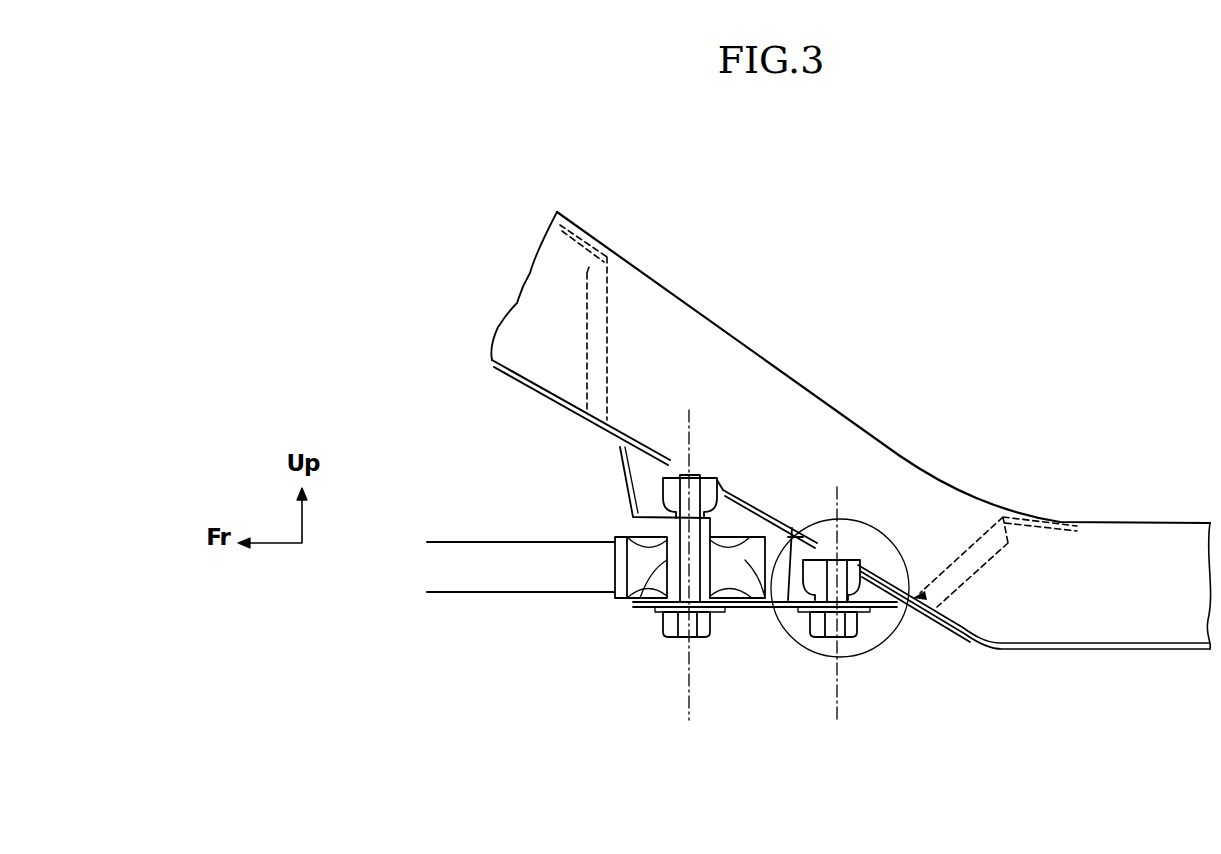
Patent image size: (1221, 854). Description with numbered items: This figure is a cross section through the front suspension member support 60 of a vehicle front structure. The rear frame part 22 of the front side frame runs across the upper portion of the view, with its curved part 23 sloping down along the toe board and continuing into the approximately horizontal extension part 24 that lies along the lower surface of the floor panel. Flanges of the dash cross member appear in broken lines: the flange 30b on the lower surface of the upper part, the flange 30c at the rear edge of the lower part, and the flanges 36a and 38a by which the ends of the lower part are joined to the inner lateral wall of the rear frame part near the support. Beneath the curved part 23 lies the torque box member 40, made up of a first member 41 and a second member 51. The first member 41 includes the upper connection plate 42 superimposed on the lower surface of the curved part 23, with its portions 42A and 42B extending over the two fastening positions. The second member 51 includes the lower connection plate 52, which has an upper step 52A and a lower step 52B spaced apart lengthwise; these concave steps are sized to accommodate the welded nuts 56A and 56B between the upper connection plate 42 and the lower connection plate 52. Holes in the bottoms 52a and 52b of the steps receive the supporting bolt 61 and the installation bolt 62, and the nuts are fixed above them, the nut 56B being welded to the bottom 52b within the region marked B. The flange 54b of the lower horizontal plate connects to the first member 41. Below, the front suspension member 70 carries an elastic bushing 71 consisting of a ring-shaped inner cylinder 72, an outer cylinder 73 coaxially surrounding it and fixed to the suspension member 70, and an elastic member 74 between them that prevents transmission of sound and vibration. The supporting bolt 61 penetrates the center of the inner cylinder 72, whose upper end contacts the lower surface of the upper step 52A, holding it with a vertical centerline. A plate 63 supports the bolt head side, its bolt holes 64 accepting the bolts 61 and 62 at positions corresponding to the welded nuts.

The rear frame part 22 is at (773, 363).
The curved part 23 is at (810, 392).
The extension part 24 is at (1193, 523).
The flange 30b is at (587, 232).
The flange 30c is at (1047, 518).
The flange 36a is at (600, 320).
The flange 38a is at (983, 572).
The torque box member 40 is at (543, 412).
The first member 41 is at (568, 407).
The second member 51 is at (589, 431).
The lower connection plate 52 is at (723, 572).
The upper step 52A is at (617, 487).
The bottom of upper step 52a is at (638, 498).
The lower step 52B is at (773, 607).
The bottom of lower step 52b is at (853, 610).
The flange 54b is at (945, 668).
The welded nut 56A is at (667, 475).
The welded nut 56B is at (870, 570).
The upper connection plate 42 is at (794, 498).
The second bracket upper portion 42A is at (708, 478).
The second bracket lower portion 42B is at (825, 535).
The B part B is at (885, 535).
The front suspension member support 60 is at (795, 616).
The supporting bolt 61 is at (667, 627).
The installation bolt 62 is at (845, 637).
The plate 63 is at (748, 610).
The bolt hole 64 is at (697, 613).
The front suspension member 70 is at (490, 592).
The elastic bushing 71 is at (629, 617).
The inner cylinder 72 is at (577, 669).
The outer cylinder 73 is at (600, 563).
The elastic member 74 is at (607, 583).